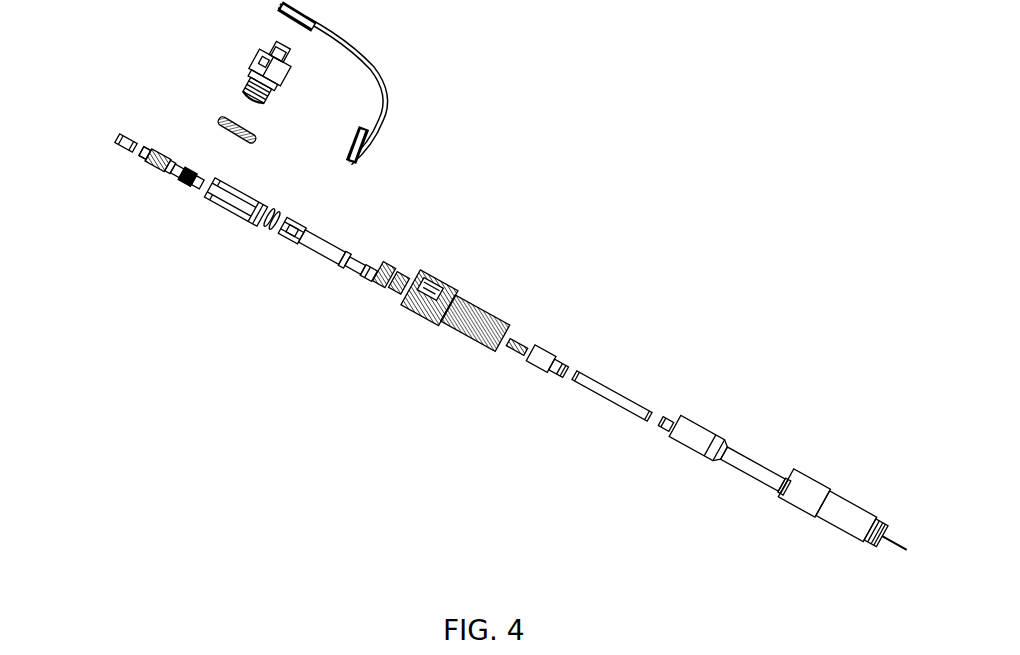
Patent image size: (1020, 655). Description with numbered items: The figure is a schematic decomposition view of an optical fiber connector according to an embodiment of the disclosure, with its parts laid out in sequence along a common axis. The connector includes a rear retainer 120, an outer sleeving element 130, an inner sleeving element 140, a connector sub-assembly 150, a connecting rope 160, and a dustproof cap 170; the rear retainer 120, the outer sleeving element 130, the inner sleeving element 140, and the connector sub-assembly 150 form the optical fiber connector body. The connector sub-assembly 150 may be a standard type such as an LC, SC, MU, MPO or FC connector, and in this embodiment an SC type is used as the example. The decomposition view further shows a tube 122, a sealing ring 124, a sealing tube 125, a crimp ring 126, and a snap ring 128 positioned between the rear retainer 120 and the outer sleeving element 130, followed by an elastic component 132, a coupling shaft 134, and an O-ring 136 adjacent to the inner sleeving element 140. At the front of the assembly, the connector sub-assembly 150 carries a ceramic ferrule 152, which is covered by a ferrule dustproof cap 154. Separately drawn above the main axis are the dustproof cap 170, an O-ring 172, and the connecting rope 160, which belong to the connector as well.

The rear retainer 120 is at (842, 497).
The tube 122 is at (733, 447).
The sealing ring 124 is at (670, 412).
The sealing tube 125 is at (622, 388).
The crimp ring 126 is at (560, 357).
The snap ring 128 is at (520, 337).
The outer sleeving element 130 is at (460, 302).
The elastic component 132 is at (395, 267).
The coupling shaft 134 is at (347, 242).
The O-ring 136 is at (263, 228).
The inner sleeving element 140 is at (215, 215).
The connector sub-assembly 150 is at (153, 167).
The ceramic ferrule 152 is at (143, 152).
The ferrule dustproof cap 154 is at (112, 143).
The connecting rope 160 is at (377, 72).
The dustproof cap 170 is at (248, 60).
The O-ring 172 is at (220, 118).